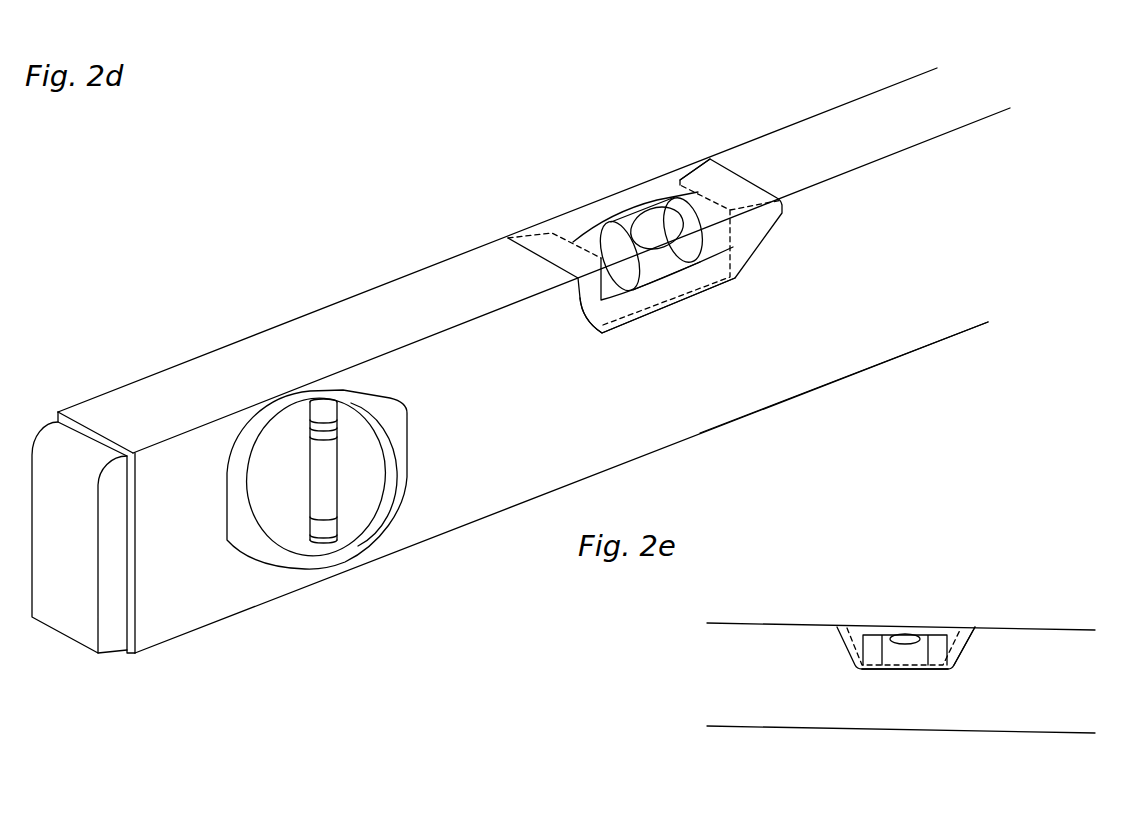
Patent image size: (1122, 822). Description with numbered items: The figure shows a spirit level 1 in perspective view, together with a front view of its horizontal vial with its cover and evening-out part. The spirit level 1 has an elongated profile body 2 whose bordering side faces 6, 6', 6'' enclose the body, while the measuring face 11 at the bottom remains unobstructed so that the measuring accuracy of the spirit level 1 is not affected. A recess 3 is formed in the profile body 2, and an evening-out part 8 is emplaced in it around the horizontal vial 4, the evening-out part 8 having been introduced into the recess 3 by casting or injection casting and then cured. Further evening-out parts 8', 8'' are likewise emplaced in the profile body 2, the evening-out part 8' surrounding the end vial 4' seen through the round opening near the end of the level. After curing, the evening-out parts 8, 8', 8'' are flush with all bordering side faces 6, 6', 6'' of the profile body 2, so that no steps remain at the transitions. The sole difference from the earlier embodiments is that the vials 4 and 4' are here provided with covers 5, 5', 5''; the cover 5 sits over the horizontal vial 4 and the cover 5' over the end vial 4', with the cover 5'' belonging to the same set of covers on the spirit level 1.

In FIG. 2D, the spirit level 1 is at (188, 215).
In FIG. 2D, the profile body 2 is at (110, 412).
In FIG. 2E, the profile body 2 is at (775, 657).
In FIG. 2D, the recess 3 is at (597, 333).
In FIG. 2E, the recess 3 is at (905, 670).
In FIG. 2D, the vial 4 is at (651, 204).
In FIG. 2E, the vial 4 is at (909, 613).
In FIG. 2D, the cover 5 is at (695, 140).
In FIG. 2E, the cover 5 is at (969, 620).
In FIG. 2D, the side face 6 is at (534, 280).
In FIG. 2D, the side face 6' is at (561, 455).
In FIG. 2E, the side face 6' is at (1026, 682).
In FIG. 2D, the side face 6'' is at (497, 213).
In FIG. 2D, the evening-out part 8 is at (645, 243).
In FIG. 2E, the evening-out part 8 is at (911, 648).
In FIG. 2D, the measuring face 11 is at (370, 605).
In FIG. 2E, the measuring face 11 is at (990, 732).
In FIG. 2D, the cover 5' is at (342, 467).
In FIG. 2D, the evening-out part 8' is at (284, 477).
In FIG. 2D, the vial 4' is at (257, 471).
In FIG. 2D, the cover 5'' is at (149, 281).
In FIG. 2D, the evening-out part 8'' is at (318, 247).